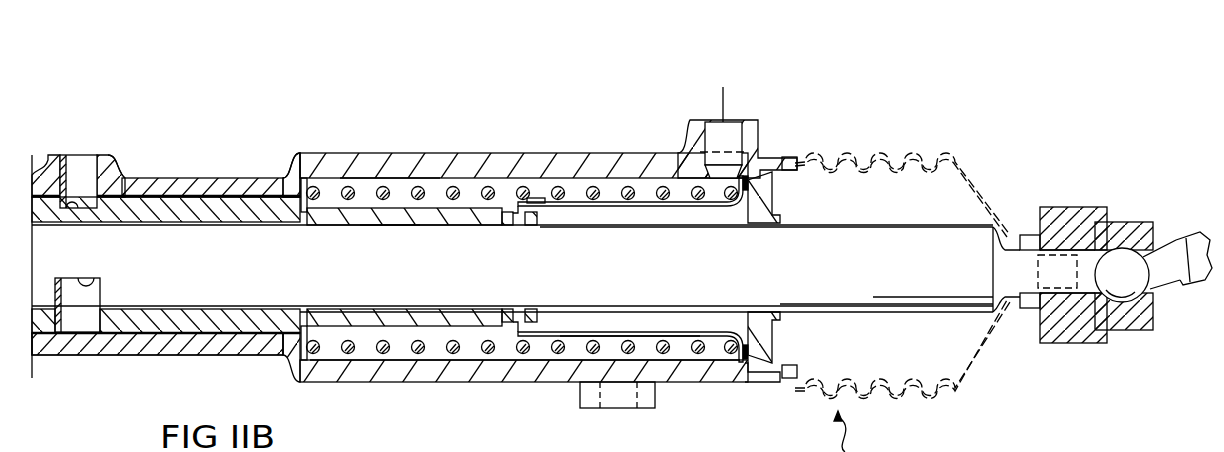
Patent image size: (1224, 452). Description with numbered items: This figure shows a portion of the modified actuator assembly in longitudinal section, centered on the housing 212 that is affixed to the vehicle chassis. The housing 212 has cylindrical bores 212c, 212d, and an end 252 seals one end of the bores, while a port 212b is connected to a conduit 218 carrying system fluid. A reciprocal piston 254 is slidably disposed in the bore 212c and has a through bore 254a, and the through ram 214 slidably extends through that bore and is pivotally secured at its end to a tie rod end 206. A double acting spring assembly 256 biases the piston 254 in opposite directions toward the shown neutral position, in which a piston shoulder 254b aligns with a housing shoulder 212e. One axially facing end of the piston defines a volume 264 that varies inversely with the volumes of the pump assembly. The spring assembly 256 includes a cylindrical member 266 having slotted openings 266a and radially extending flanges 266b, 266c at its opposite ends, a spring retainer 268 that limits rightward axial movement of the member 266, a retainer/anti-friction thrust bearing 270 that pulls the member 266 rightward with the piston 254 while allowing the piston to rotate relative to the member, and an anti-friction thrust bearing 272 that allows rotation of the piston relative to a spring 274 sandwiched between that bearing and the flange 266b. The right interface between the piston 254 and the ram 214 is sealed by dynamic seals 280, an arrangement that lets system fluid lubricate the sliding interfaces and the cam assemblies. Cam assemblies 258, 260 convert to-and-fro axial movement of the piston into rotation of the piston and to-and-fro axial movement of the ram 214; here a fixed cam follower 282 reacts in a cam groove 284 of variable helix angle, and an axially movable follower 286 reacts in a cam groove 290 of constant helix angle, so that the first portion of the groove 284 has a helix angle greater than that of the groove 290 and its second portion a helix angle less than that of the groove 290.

The tie rod ends 206 is at (1190, 236).
The housing 212 is at (478, 150).
The port 212b is at (742, 122).
The cylindrical bore 212c is at (166, 334).
The cylindrical bore 212d is at (393, 181).
The shoulder 212e is at (303, 180).
The through ram 214 is at (857, 280).
The conduit 218 is at (724, 96).
The end 252 is at (778, 196).
The piston 254 is at (217, 230).
The through bore 254a is at (388, 226).
The piston shoulder 254b is at (307, 207).
The double acting spring assembly 256 is at (576, 180).
The cam assembly 258 is at (50, 330).
The cam assembly 260 is at (127, 167).
The volume 264 is at (388, 333).
The cylindrical member 266 is at (676, 215).
The slotted openings 266a is at (618, 335).
The radially extending flange 266b is at (768, 340).
The radially extending flange 266c is at (520, 333).
The spring retainer 268 is at (748, 378).
The retainer/anti-friction thrust bearing 270 is at (541, 210).
The anti-friction thrust bearing 272 is at (313, 355).
The spring 274 is at (461, 355).
The dynamic seals 280 is at (530, 225).
The fixed cam follower 282 is at (72, 176).
The cam groove 284 is at (72, 209).
The axially movable follower 286 is at (85, 302).
The cam groove 290 is at (100, 283).